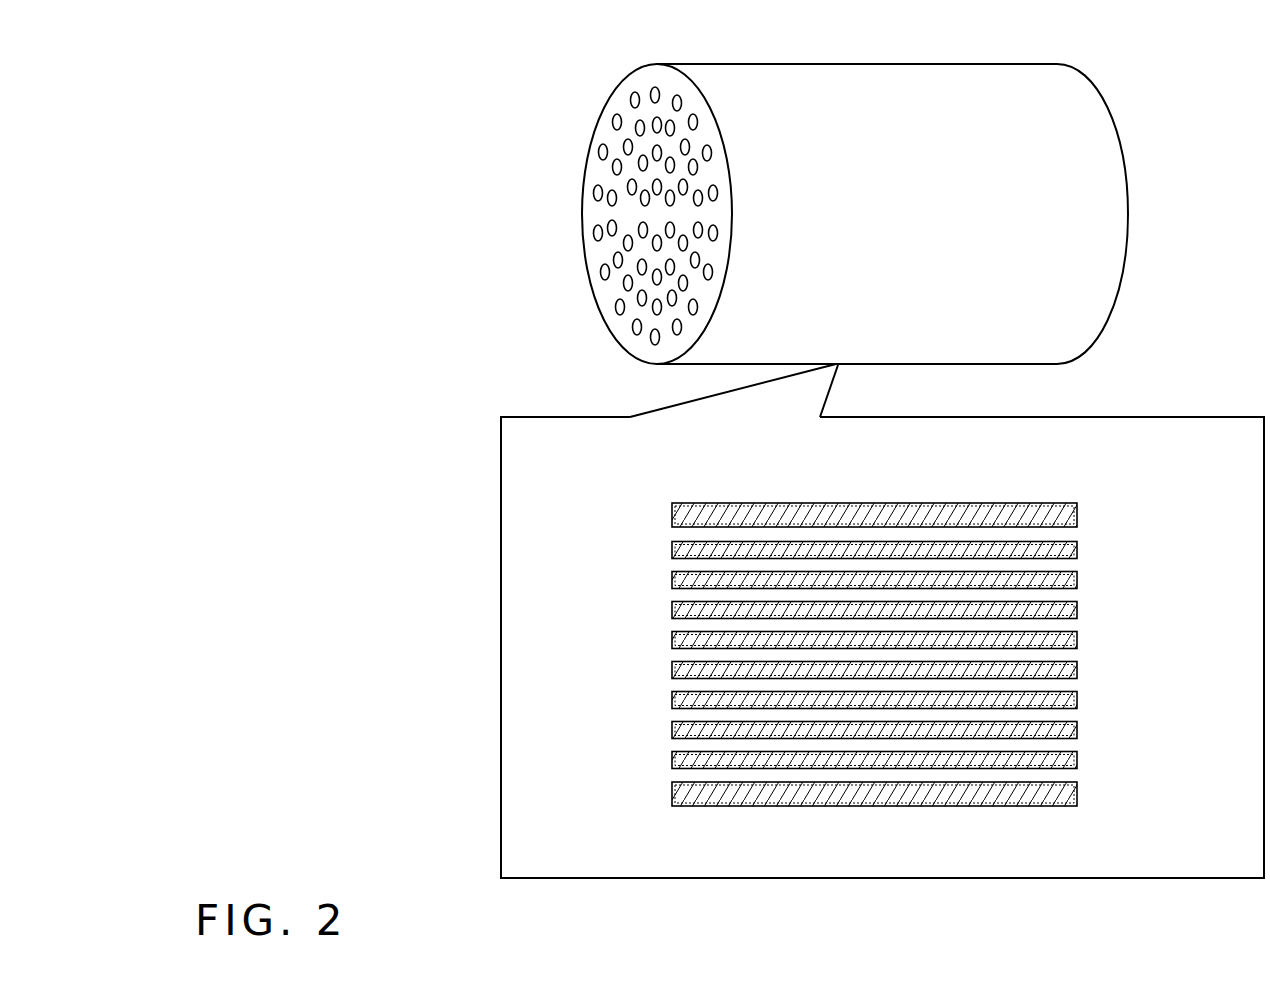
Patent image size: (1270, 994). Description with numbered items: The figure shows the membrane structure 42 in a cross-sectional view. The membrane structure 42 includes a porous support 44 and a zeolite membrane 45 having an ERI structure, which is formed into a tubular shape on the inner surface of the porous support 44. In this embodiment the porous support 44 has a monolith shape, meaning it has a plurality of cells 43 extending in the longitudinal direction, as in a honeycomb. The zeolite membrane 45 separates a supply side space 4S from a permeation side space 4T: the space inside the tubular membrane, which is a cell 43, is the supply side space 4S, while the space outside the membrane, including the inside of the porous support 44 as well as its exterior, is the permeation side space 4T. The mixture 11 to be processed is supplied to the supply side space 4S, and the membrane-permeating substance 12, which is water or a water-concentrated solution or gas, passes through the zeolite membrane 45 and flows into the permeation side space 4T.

The membrane structure 42 is at (1133, 48).
The cell 43 is at (597, 157).
The porous support 44 is at (605, 130).
The zeolite membrane having an ERI structure 45 is at (593, 235).
The permeation side space 4T is at (1236, 541).
The supply side space 4S is at (626, 633).
The mixture 11 is at (1117, 655).
The membrane-permeating substance 12 is at (697, 657).